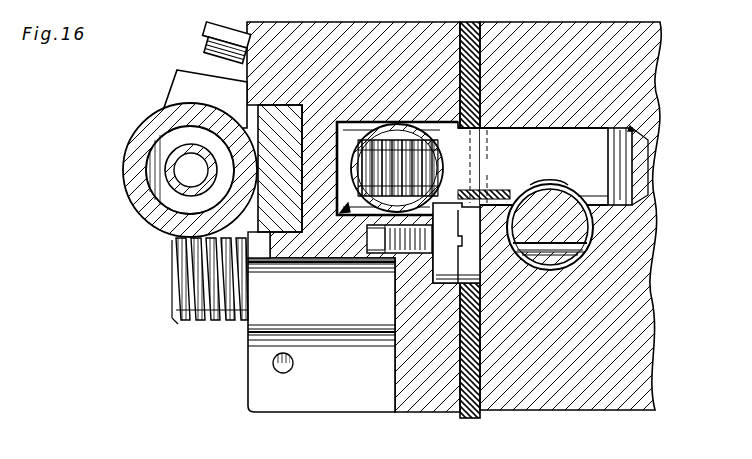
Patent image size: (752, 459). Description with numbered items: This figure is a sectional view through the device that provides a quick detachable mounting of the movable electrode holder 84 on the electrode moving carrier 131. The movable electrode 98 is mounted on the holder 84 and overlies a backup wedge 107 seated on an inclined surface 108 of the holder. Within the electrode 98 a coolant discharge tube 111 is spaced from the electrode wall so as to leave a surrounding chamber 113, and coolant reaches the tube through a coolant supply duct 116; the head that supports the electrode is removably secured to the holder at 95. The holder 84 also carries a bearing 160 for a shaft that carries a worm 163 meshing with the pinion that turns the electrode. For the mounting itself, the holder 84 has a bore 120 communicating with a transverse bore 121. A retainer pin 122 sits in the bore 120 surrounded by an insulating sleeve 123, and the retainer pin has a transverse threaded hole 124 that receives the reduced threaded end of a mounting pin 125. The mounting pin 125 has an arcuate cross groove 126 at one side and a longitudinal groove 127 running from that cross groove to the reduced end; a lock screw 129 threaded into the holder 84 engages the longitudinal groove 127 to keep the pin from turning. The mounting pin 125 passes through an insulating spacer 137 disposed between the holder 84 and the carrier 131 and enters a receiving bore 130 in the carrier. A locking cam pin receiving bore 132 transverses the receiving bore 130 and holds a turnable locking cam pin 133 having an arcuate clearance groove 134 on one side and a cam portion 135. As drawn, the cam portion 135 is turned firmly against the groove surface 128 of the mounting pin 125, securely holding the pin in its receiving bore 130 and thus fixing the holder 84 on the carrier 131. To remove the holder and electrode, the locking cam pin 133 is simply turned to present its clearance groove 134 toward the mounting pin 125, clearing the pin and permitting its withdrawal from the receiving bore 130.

The movable electrode holder 84 is at (369, 33).
The securing point of head 95 is at (273, 362).
The movable electrode 98 is at (145, 218).
The backup wedge 107 is at (305, 122).
The inclined surface 108 is at (277, 118).
The coolant discharge tube 111 is at (172, 176).
The surrounding chamber 113 is at (165, 150).
The coolant supply duct 116 is at (232, 38).
The bore 120 is at (360, 240).
The transverse bore 121 is at (322, 240).
The retainer pin 122 is at (360, 180).
The insulating sleeve 123 is at (343, 205).
The transverse threaded hole 124 is at (407, 138).
The mounting pin 125 is at (604, 174).
The arcuate cross groove 126 is at (519, 183).
The longitudinal groove 127 is at (490, 189).
The groove surface 128 is at (584, 194).
The lock screw 129 is at (434, 272).
The receiving bore 130 is at (636, 128).
The electrode moving carrier 131 is at (612, 12).
The locking cam pin receiving bore 132 is at (598, 231).
The locking cam pin 133 is at (592, 246).
The arcuate clearance groove 134 is at (563, 250).
The cam portion 135 is at (548, 183).
The insulating spacer 137 is at (472, 22).
The bearing 160 is at (263, 318).
The worm 163 is at (184, 282).